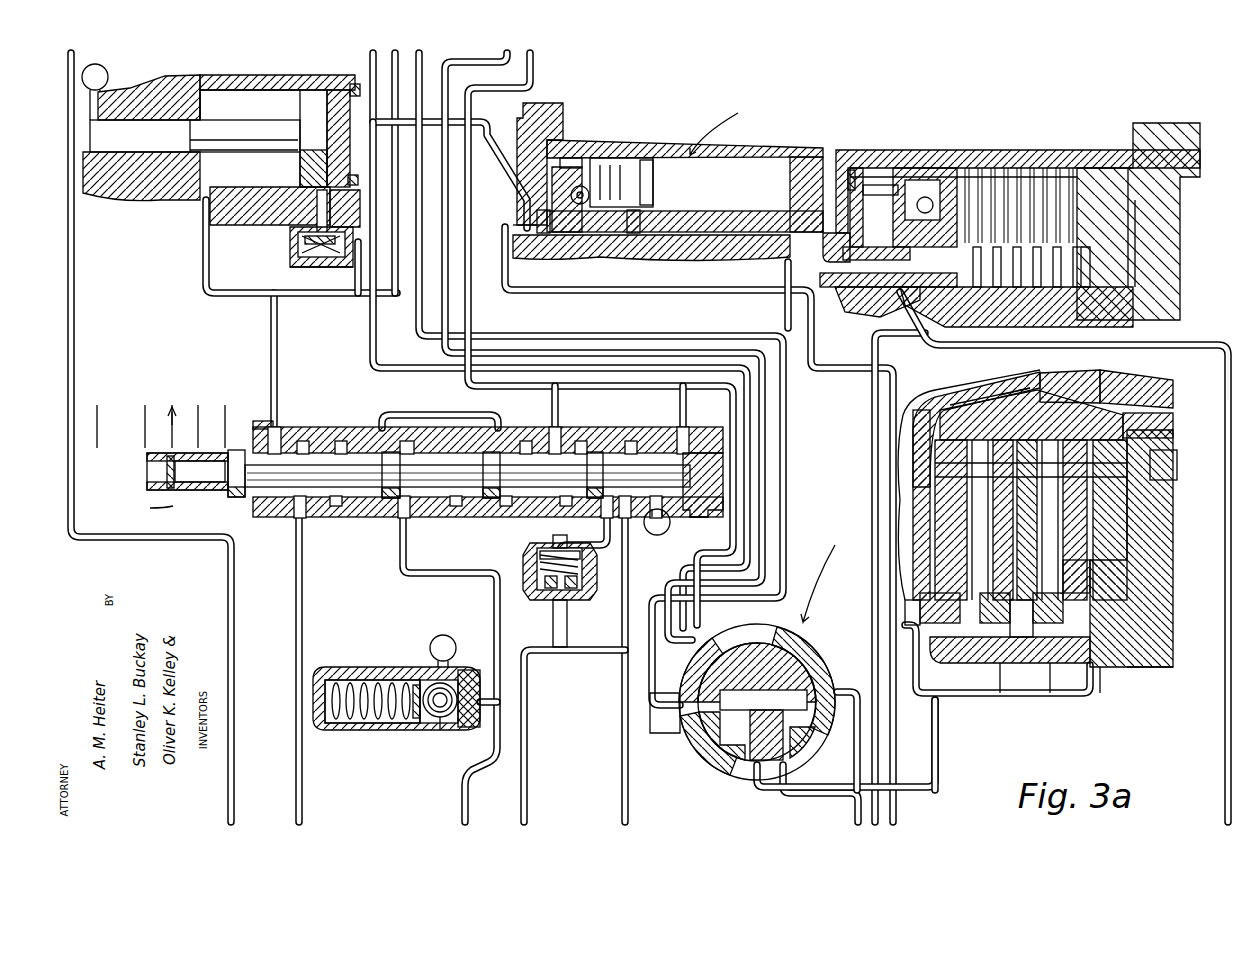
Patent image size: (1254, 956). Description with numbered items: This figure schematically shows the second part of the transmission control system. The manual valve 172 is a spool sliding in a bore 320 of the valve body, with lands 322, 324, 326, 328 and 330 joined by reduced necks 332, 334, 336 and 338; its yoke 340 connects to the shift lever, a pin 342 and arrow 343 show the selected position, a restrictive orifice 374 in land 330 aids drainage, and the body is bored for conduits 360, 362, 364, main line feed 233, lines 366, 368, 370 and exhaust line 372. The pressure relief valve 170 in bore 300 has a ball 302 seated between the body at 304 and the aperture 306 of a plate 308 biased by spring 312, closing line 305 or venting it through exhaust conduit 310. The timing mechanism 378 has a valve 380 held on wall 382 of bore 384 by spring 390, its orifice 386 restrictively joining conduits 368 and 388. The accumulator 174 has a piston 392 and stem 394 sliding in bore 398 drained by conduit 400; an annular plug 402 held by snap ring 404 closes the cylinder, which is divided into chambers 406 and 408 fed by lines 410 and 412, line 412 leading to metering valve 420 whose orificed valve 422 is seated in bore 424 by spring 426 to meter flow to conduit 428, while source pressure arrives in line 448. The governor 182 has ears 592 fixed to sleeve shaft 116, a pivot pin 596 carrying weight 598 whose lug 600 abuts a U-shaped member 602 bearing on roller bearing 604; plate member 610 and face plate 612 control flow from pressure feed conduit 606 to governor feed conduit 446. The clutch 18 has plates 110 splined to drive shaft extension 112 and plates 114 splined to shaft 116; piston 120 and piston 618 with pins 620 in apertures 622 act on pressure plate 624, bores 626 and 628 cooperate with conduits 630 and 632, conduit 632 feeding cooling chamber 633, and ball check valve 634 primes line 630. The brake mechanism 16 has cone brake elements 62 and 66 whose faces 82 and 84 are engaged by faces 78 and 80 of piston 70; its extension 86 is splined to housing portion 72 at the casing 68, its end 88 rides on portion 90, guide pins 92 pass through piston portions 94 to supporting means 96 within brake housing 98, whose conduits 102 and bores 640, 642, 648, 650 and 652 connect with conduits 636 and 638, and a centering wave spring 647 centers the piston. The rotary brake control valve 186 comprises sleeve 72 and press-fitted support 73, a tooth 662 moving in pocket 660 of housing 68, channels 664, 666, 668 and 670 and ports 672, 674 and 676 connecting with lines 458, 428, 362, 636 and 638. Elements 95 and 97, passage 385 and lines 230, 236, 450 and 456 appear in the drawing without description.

The brake mechanism 16 is at (1232, 345).
The friction clutch mechanism 18 is at (972, 144).
The cone brake element 62 is at (960, 390).
The cone brake element 66 is at (1155, 395).
The transmission casing connection 68 is at (815, 615).
The piston 70 is at (1029, 398).
The brake housing element 72 is at (1167, 643).
The support 73 is at (768, 660).
The friction face 78 is at (1005, 395).
The friction face 80 is at (1082, 395).
The friction face 82 is at (970, 400).
The friction face 84 is at (1122, 395).
The extension 86 is at (1160, 430).
The other end 88 is at (920, 425).
The brake housing portion 90 is at (905, 620).
The guide pins 92 is at (965, 465).
The piston portions 94 is at (972, 530).
The piston 95 is at (993, 545).
The piston supporting means 96 is at (1015, 465).
The piston 97 is at (1020, 560).
The brake housing 98 is at (1157, 668).
The fluid pressure conduits 102 is at (1058, 680).
The friction clutch plates 110 is at (1020, 290).
The drive shaft extension 112 is at (1038, 290).
The friction plates 114 is at (1071, 160).
The hollow shaft 116 is at (668, 250).
The piston 120 is at (802, 190).
The pressure relief valve 170 is at (337, 661).
The manual valve 172 is at (349, 423).
The fluid pressure accumulator 174 is at (160, 86).
The governor mechanism 182 is at (710, 142).
The rotary brake control valve 186 is at (705, 768).
The line pressure passage 230 is at (75, 265).
The main line feed 233 is at (400, 570).
The passage 236 is at (580, 652).
The bore 300 is at (388, 680).
The ball 302 is at (440, 718).
The valve body seat 304 is at (472, 668).
The fluid pressure line 305 is at (488, 708).
The aperture 306 is at (416, 683).
The slidable plate 308 is at (428, 722).
The exhaust conduit 310 is at (430, 655).
The spring 312 is at (356, 720).
The bore 320 is at (325, 440).
The land 322 is at (237, 450).
The land 324 is at (388, 500).
The land 326 is at (490, 500).
The land 328 is at (595, 452).
The land 330 is at (700, 453).
The neck portion 332 is at (345, 497).
The neck portion 334 is at (445, 498).
The neck portion 336 is at (560, 465).
The neck portion 338 is at (625, 455).
The yoke 340 is at (185, 487).
The pin 342 is at (165, 468).
The arrow 343 is at (185, 400).
The fluid conduit 360 is at (272, 320).
The fluid conduit 362 is at (297, 580).
The fluid conduit 364 is at (422, 415).
The line 366 is at (552, 410).
The line 368 is at (592, 548).
The line 370 is at (692, 427).
The exhaust line 372 is at (670, 522).
The restrictive orifice 374 is at (708, 510).
The fluid metering or timing mechanism 378 is at (516, 553).
The valve 380 is at (578, 588).
The wall 382 is at (572, 580).
The bore 384 is at (580, 560).
The stem 385 is at (570, 612).
The orifice 386 is at (254, 75).
The conduit 388 is at (580, 598).
The spring 390 is at (560, 535).
The piston 392 is at (300, 165).
The stem 394 is at (235, 146).
The bore 398 is at (140, 165).
The fluid conduit 400 is at (104, 92).
The annular plug 402 is at (346, 165).
The snap ring 404 is at (352, 78).
The fluid chamber 406 is at (216, 104).
The fluid chamber 408 is at (346, 147).
The fluid line 410 is at (204, 232).
The fluid line 412 is at (317, 205).
The metering valve 420 is at (285, 250).
The orificed valve 422 is at (305, 238).
The bore 424 is at (350, 233).
The spring 426 is at (325, 268).
The conduit 428 is at (370, 345).
The governor feed conduit 446 is at (371, 56).
The line 448 is at (393, 295).
The passage 450 is at (423, 60).
The passage 456 is at (512, 58).
The fluid pressure line 458 is at (536, 80).
The upstanding ears 592 is at (592, 188).
The pivot pin 596 is at (585, 190).
The weight 598 is at (655, 188).
The lug 600 is at (570, 168).
The U-shaped member 602 is at (566, 158).
The roller bearing 604 is at (548, 235).
The pressure feed conduit 606 is at (510, 278).
The plate member 610 is at (518, 122).
The roller bearing face plate 612 is at (527, 237).
The piston 618 is at (845, 165).
The pins 620 is at (874, 185).
The apertures 622 is at (897, 165).
The pressure plate 624 is at (920, 230).
The bore 626 is at (838, 270).
The bore 628 is at (920, 300).
The fluid conduit 630 is at (782, 266).
The fluid conduit 632 is at (1178, 345).
The chamber 633 is at (1087, 285).
The ball check valve 634 is at (940, 185).
The conduit 636 is at (778, 787).
The conduit 638 is at (938, 748).
The bore 640 is at (965, 606).
The bore 642 is at (1027, 640).
The centering wave spring 647 is at (1172, 470).
The bore 648 is at (980, 665).
The bore 650 is at (1022, 680).
The bore 652 is at (1106, 665).
The pocket 660 is at (752, 640).
The tooth 662 is at (798, 635).
The fluid channel 664 is at (713, 771).
The fluid channel 666 is at (740, 750).
The fluid channel 668 is at (822, 660).
The fluid channel 670 is at (795, 730).
The port 672 is at (700, 640).
The port 674 is at (705, 730).
The port 676 is at (850, 690).